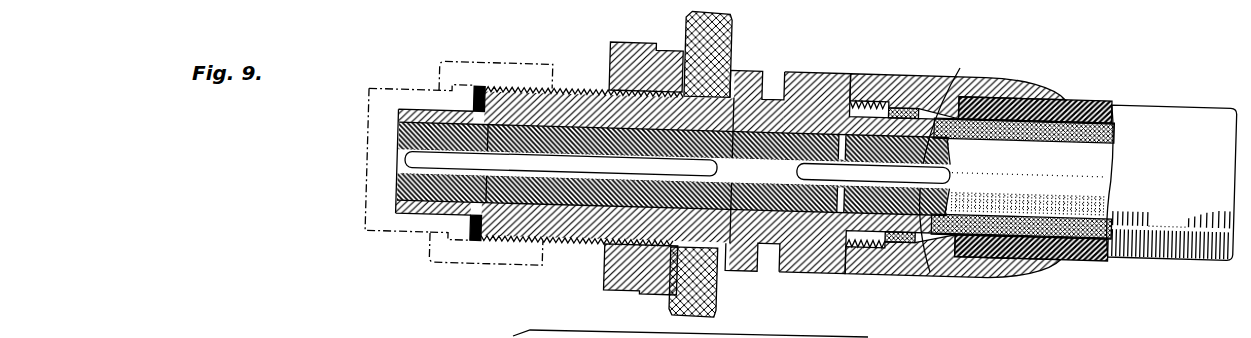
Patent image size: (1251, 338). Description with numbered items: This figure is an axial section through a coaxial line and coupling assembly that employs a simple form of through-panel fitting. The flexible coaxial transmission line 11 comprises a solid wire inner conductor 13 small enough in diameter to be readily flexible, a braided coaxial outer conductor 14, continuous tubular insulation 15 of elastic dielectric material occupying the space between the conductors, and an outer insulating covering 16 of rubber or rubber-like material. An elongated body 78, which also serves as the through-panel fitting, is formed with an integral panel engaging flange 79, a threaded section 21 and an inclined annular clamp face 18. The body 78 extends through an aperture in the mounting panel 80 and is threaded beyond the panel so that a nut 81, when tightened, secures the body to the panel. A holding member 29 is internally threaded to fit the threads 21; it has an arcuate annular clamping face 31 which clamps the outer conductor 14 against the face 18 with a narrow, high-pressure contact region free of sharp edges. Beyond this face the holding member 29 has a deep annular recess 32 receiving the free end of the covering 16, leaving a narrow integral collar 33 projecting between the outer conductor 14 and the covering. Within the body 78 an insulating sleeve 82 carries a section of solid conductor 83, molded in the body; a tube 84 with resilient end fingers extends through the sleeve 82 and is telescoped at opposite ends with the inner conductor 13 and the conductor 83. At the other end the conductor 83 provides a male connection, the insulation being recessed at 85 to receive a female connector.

The flexible coaxial conductor transmission line 11 is at (1196, 108).
The inner conductor 13 is at (815, 180).
The outer conductor 14 is at (1113, 128).
The tubular insulation 15 is at (940, 235).
The outer insulating covering 16 is at (1073, 262).
The inclined annular clamp face 18 is at (1029, 159).
The threaded section 21 is at (808, 100).
The holding member 29 is at (888, 83).
The annular clamping face 31 is at (940, 95).
The annular recess 32 is at (1011, 100).
The collar 33 is at (1077, 102).
The elongated body 78 is at (767, 105).
The panel engaging flange 79 is at (731, 272).
The mounting panel 80 is at (724, 40).
The nut 81 is at (628, 54).
The insulating sleeve 82 is at (572, 120).
The solid conductor 83 is at (538, 158).
The tube 84 is at (733, 128).
The recess 85 is at (405, 213).